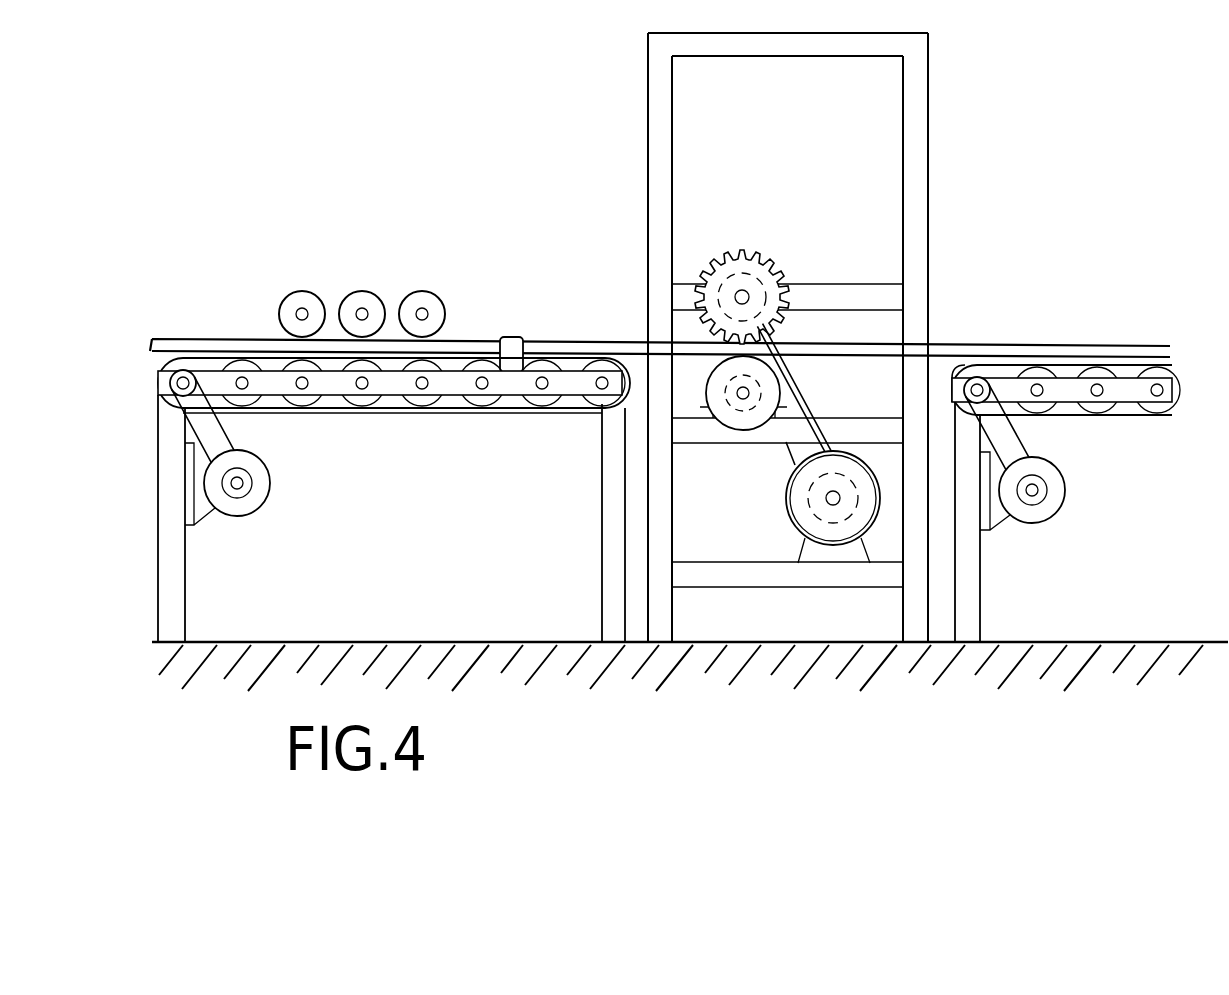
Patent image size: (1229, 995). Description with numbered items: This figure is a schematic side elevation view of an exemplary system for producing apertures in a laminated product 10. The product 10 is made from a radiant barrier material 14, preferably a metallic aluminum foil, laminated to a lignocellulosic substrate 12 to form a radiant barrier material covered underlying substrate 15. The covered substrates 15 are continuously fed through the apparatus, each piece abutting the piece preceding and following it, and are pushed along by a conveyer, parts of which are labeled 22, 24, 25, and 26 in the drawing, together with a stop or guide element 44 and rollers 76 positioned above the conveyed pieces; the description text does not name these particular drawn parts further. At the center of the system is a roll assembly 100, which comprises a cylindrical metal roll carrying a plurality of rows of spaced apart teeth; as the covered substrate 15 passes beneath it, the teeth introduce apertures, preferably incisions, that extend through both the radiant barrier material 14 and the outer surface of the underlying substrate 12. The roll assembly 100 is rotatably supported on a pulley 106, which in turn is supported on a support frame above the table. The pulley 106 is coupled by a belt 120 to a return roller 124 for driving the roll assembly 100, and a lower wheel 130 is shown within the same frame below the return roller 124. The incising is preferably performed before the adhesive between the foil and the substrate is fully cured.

The laminated product 10 is at (1140, 338).
The lignocellulosic substrate 12 is at (1090, 355).
The radiant barrier material 14 is at (618, 339).
The radiant barrier material covered underlying substrate 15 is at (479, 356).
The sprocket 22 is at (175, 363).
The conveyor frame 24 is at (517, 413).
The support post 25 is at (602, 577).
The roller chain conveyor 26 is at (362, 418).
The stop block 44 is at (521, 337).
The rollers 76 is at (418, 291).
The roll assembly 100 is at (794, 246).
The pulley 106 is at (737, 250).
The belt 120 is at (784, 458).
The return roller 124 is at (781, 392).
The drive wheel 130 is at (787, 512).